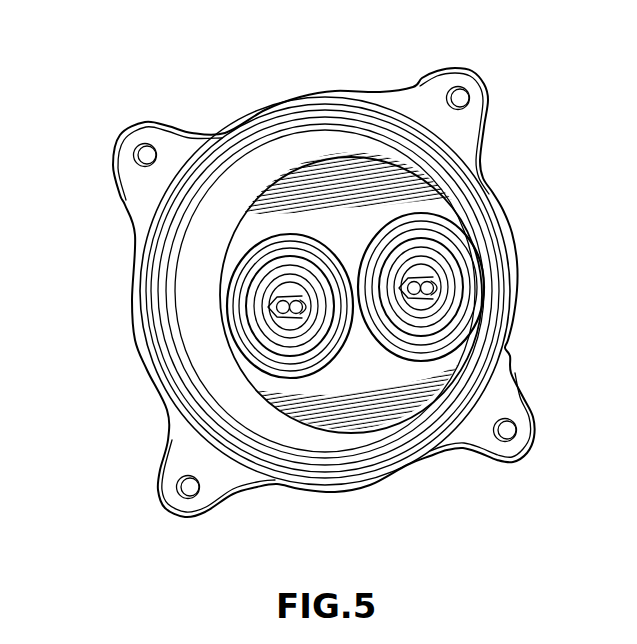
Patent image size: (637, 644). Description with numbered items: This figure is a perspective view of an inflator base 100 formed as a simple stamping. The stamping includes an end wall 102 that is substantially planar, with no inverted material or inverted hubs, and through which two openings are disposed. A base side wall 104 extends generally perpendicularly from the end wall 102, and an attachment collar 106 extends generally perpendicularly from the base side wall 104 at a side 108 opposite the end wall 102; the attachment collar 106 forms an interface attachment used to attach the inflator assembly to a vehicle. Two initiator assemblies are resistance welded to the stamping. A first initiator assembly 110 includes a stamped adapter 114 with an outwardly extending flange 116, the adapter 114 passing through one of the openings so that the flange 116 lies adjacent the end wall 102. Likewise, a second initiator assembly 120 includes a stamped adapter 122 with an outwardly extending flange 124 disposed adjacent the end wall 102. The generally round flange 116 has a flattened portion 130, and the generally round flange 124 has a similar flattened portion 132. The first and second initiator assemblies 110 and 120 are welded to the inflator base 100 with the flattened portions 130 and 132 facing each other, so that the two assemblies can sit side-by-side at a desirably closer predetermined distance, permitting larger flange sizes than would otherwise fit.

The inflator base 100 is at (165, 52).
The end wall 102 is at (320, 187).
The base side wall 104 is at (183, 299).
The attachment collar 106 is at (165, 455).
The side 108 is at (150, 356).
The first initiator assembly 110 is at (223, 252).
The stamped adapter 114 is at (287, 370).
The outwardly extending flange 116 is at (340, 350).
The second initiator assembly 120 is at (430, 203).
The stamped adapter 122 is at (470, 260).
The outwardly extending flange 124 is at (490, 293).
The flattened portion 130 is at (352, 262).
The flattened portion 132 is at (347, 347).